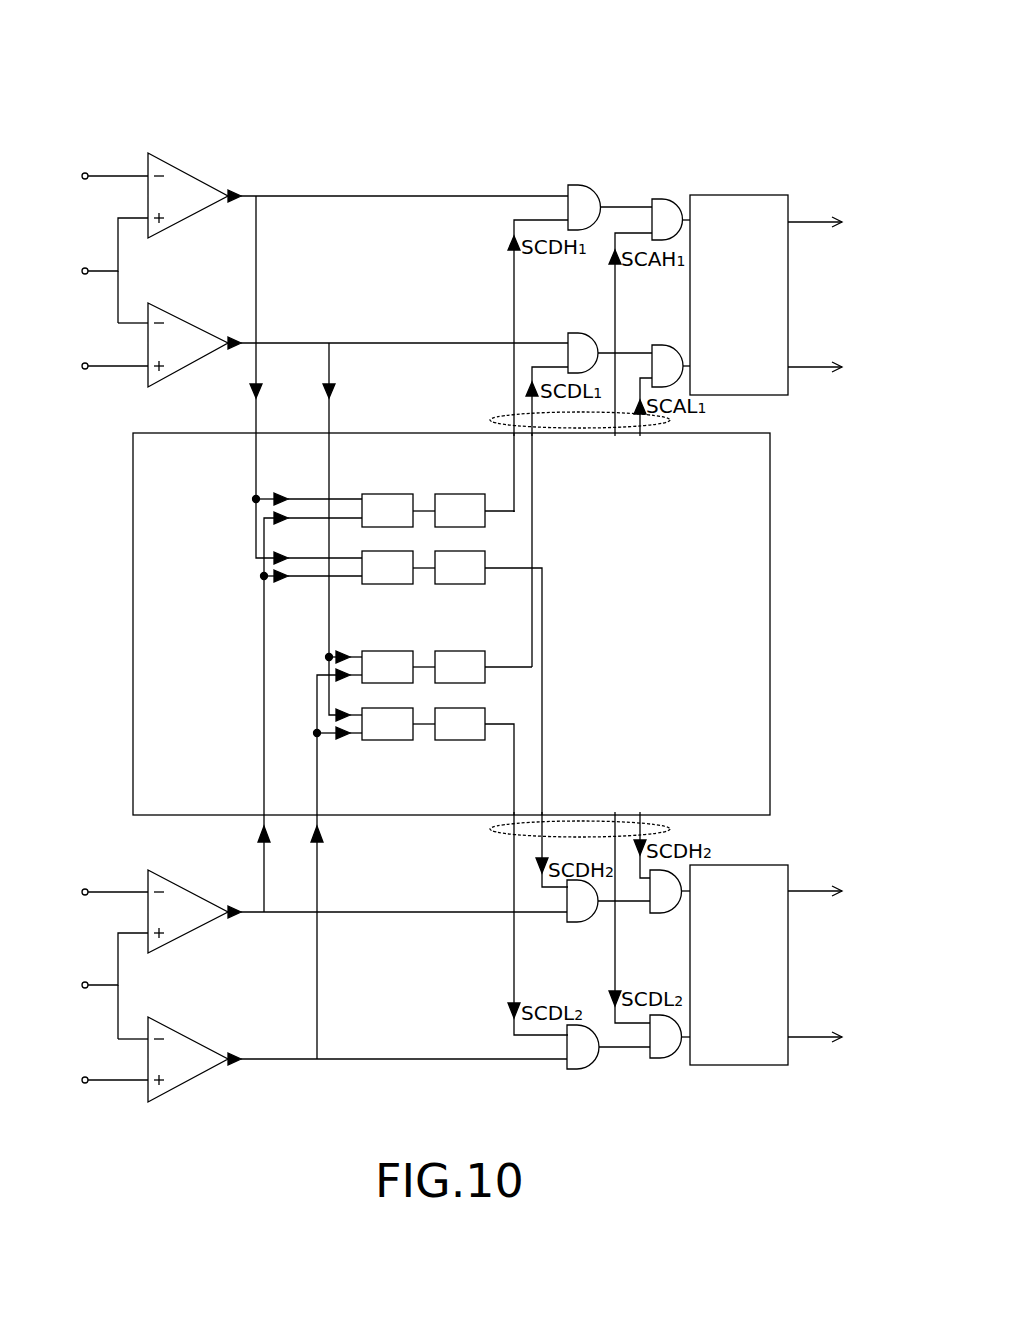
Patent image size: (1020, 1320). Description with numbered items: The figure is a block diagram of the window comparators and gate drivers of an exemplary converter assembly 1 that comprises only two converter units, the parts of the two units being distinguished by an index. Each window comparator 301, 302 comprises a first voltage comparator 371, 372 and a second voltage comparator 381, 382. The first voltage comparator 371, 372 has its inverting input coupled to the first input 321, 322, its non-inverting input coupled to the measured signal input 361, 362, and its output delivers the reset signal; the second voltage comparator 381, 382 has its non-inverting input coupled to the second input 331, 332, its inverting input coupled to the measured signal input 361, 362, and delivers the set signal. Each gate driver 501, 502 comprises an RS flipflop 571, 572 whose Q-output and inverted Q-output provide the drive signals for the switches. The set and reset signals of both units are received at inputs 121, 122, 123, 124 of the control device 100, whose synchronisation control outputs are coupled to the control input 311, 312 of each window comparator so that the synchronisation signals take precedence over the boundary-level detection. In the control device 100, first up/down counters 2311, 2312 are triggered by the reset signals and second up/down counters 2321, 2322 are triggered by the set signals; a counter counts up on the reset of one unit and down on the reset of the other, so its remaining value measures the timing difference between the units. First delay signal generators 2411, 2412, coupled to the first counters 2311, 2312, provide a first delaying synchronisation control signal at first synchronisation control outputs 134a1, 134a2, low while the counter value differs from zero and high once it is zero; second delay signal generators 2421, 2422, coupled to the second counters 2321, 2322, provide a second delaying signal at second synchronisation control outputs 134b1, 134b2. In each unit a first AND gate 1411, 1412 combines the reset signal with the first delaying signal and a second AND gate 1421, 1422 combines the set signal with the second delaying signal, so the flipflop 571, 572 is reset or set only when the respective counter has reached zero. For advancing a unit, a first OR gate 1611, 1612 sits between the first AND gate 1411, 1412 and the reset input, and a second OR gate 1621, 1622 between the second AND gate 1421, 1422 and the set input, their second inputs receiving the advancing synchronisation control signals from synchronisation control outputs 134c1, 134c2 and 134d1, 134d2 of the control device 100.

The converter assembly 1 is at (96, 82).
The window comparator 301 is at (240, 108).
The window comparator 302 is at (242, 1118).
The gate driver 501 is at (748, 108).
The gate driver 502 is at (747, 1118).
The first input 321 is at (94, 165).
The first input 322 is at (94, 881).
The second input 331 is at (94, 355).
The second input 332 is at (94, 1069).
The measured signal input 361 is at (94, 270).
The measured signal input 362 is at (94, 986).
The first voltage comparator 371 is at (188, 175).
The first voltage comparator 372 is at (188, 891).
The second voltage comparator 381 is at (188, 322).
The second voltage comparator 382 is at (188, 1036).
The control device 100 is at (172, 433).
The input 121 is at (255, 436).
The input 122 is at (328, 436).
The input 123 is at (262, 813).
The input 124 is at (315, 813).
The first up/down counter 2311 is at (398, 510).
The first up/down counter 2312 is at (398, 567).
The second up/down counter 2321 is at (398, 667).
The second up/down counter 2322 is at (398, 724).
The first delay signal generator 2411 is at (474, 510).
The first delay signal generator 2412 is at (501, 719).
The second delay signal generator 2421 is at (483, 667).
The second delay signal generator 2422 is at (501, 871).
The first synchronisation control output 134a1 is at (512, 436).
The second synchronisation control output 134b1 is at (537, 436).
The synchronisation control output 134c1 is at (617, 436).
The synchronisation control output 134d1 is at (642, 436).
The first synchronisation control output 134a2 is at (545, 813).
The second synchronisation control output 134b2 is at (513, 813).
The synchronisation control output 134c2 is at (642, 813).
The synchronisation control output 134d2 is at (616, 813).
The first AND gate 1411 is at (577, 186).
The first AND gate 1412 is at (577, 922).
The second AND gate 1421 is at (577, 334).
The second AND gate 1422 is at (575, 1070).
The first OR gate 1611 is at (662, 200).
The first OR gate 1612 is at (656, 913).
The second OR gate 1621 is at (660, 346).
The second OR gate 1622 is at (659, 1059).
The RS flipflop 571 is at (766, 295).
The RS flipflop 572 is at (766, 965).
The control input 311 is at (680, 420).
The control input 312 is at (680, 829).